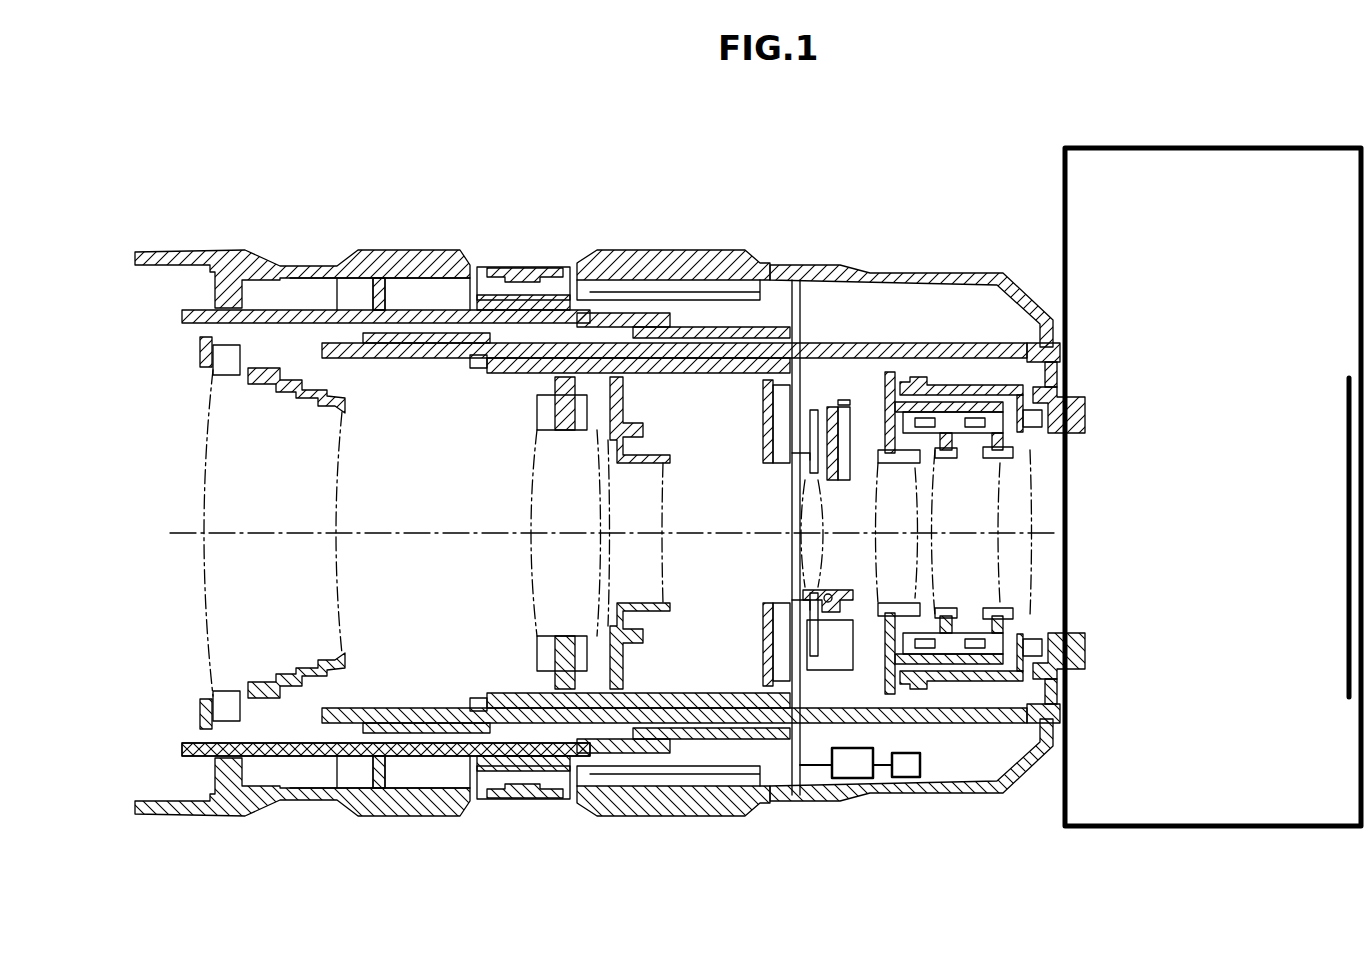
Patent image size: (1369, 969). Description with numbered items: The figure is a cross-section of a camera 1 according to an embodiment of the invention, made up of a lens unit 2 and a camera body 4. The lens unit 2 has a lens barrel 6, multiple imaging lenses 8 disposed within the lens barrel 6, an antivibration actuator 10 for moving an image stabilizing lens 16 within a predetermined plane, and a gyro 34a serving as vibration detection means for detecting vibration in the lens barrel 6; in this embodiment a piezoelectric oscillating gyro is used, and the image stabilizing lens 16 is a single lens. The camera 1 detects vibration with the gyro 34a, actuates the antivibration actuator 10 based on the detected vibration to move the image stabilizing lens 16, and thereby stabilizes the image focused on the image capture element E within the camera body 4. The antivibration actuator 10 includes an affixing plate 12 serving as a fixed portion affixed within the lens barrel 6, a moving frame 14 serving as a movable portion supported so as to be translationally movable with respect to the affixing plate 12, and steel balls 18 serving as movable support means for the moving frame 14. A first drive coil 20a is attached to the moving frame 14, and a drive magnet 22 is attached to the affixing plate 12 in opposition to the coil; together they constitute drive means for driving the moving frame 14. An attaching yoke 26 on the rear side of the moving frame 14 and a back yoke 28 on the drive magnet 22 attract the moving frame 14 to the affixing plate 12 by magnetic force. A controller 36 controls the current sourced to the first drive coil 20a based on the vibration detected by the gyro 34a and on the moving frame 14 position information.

The camera 1 is at (620, 188).
The lens unit 2 is at (479, 266).
The camera body 4 is at (1201, 147).
The lens barrel 6 is at (422, 742).
The imaging lenses 8 is at (225, 630).
The antivibration actuator 10 is at (823, 395).
The affixing plate 12 is at (890, 400).
The moving frame 14 is at (812, 412).
The image stabilizing lens 16 is at (808, 552).
The steel balls 18 is at (806, 598).
The first drive coil 20a is at (814, 408).
The drive magnet 22 is at (836, 405).
The attaching yoke 26 is at (810, 440).
The back yoke 28 is at (850, 402).
The gyro 34a is at (907, 779).
The controller 36 is at (856, 780).
The image capture element E is at (1348, 636).